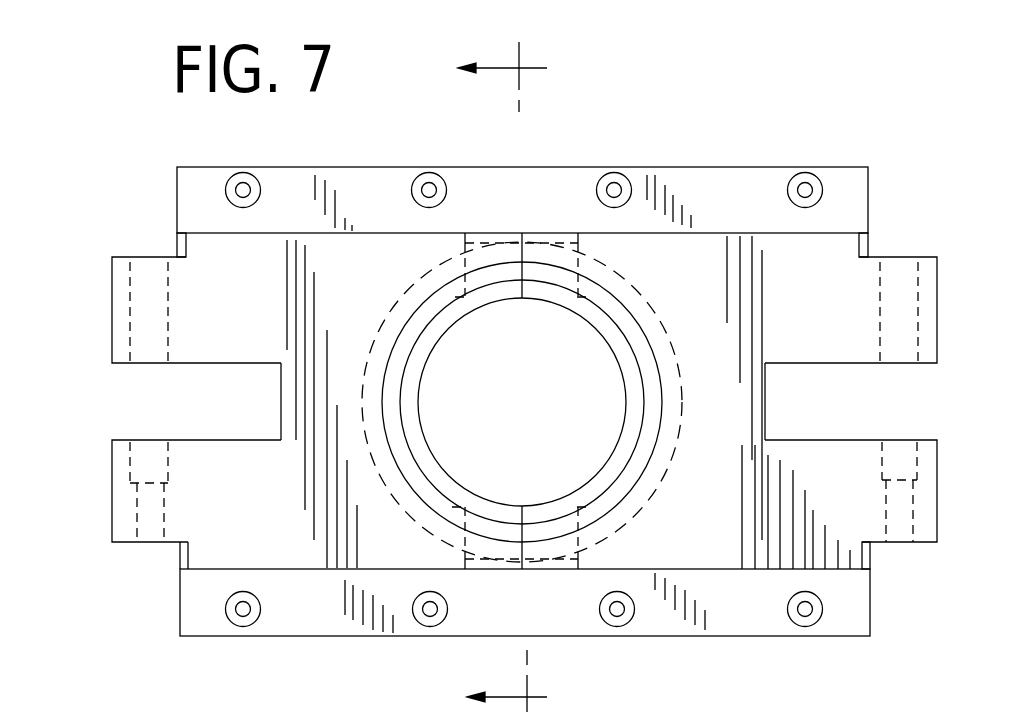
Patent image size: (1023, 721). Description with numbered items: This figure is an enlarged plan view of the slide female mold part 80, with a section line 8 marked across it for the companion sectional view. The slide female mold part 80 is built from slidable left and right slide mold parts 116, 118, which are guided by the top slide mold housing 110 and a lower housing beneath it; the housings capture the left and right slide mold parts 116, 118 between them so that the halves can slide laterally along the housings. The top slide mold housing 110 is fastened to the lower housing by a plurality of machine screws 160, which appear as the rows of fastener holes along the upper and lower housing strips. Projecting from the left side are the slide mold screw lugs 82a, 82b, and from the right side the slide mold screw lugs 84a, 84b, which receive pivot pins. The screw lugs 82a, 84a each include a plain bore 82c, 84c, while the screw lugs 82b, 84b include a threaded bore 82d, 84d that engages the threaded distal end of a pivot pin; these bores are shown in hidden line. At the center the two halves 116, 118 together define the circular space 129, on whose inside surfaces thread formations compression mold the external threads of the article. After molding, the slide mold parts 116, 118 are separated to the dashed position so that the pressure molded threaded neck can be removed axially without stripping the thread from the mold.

The section line 8- 8 is at (511, 378).
The slide female mold part 80 is at (752, 637).
The slide mold screw lug 82a is at (112, 313).
The slide mold screw lug 82b is at (120, 490).
The plain bore 82c is at (140, 305).
The threaded bore 82d is at (140, 548).
The slide mold screw lug 84a is at (937, 287).
The slide mold screw lug 84b is at (933, 492).
The plain bore 84c is at (917, 298).
The threaded bore 84d is at (912, 505).
The top slide mold housing 110 is at (503, 190).
The left slide mold part 116 is at (235, 547).
The right slide mold part 118 is at (818, 507).
The space 129 is at (462, 440).
The machine screw 160 is at (252, 618).